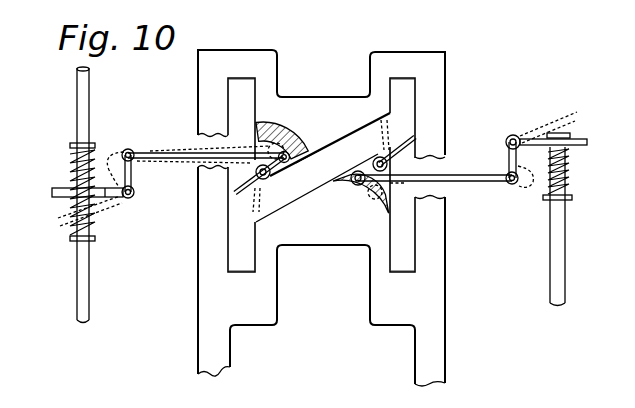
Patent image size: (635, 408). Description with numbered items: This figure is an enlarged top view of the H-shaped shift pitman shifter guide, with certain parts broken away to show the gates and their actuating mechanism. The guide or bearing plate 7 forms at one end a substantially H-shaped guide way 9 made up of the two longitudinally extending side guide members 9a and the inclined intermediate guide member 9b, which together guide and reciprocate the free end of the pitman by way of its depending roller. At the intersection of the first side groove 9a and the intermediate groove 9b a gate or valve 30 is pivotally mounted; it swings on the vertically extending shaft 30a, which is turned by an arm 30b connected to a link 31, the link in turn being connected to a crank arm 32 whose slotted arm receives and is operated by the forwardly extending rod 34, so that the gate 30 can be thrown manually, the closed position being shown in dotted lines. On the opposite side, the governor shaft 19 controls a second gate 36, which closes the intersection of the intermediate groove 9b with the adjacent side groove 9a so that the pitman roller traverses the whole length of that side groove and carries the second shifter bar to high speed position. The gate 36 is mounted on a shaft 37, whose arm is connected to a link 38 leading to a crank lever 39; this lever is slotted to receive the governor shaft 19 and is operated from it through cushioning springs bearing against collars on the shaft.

The guide or bearing plate 7 is at (447, 369).
The H-shaped guide members 9 is at (433, 266).
The side guide members 9a is at (463, 221).
The intermediate guide member 9b is at (297, 200).
The governor shaft 19 is at (557, 276).
The gate or valve 30 is at (261, 181).
The vertically extending shaft 30a is at (285, 185).
The arm 30b is at (303, 161).
The link 31 is at (175, 151).
The crank arm 32 is at (134, 181).
The rod 34 is at (81, 301).
The gate 36 is at (396, 144).
The shaft 37 is at (388, 165).
The link 38 is at (466, 170).
The crank lever 39 is at (510, 158).